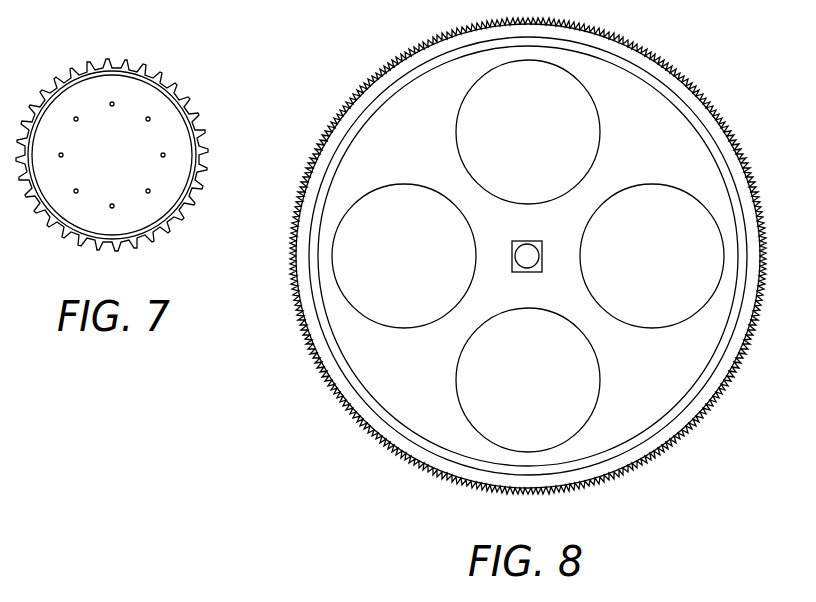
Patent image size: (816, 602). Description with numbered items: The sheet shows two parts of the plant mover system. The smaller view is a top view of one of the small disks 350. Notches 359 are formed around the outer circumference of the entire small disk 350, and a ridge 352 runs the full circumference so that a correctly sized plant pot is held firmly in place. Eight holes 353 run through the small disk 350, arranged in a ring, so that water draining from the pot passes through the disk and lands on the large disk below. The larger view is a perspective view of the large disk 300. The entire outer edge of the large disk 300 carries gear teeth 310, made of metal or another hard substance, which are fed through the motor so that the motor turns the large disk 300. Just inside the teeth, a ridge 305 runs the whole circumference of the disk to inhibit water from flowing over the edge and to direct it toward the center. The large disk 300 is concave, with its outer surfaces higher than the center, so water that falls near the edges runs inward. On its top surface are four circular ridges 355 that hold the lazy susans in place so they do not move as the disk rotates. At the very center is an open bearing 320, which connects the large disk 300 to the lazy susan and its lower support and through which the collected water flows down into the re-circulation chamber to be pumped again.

In FIG. 8, the large disk 300 is at (635, 88).
In FIG. 8, the ridge 305 is at (680, 410).
In FIG. 8, the gear teeth 310 is at (710, 107).
In FIG. 8, the open bearing 320 is at (542, 268).
In FIG. 8, the circular ridges 355 is at (455, 127).
In FIG. 7, the small disk 350 is at (135, 85).
In FIG. 7, the ridge 352 is at (43, 210).
In FIG. 7, the holes 353 is at (149, 193).
In FIG. 7, the notches 359 is at (197, 187).